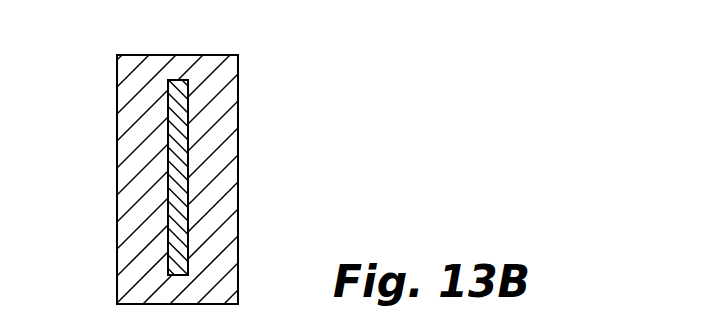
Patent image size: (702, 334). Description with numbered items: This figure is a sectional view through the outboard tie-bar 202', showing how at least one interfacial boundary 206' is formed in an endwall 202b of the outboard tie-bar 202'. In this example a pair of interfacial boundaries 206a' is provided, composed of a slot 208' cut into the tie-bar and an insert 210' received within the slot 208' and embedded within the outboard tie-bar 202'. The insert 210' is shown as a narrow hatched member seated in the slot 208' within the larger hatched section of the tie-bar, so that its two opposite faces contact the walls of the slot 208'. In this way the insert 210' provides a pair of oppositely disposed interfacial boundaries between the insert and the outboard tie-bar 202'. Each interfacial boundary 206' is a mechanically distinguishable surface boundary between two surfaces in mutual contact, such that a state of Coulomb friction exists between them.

The outboard tie-bar 202' is at (236, 179).
The endwall 202b is at (139, 55).
The insert 210' is at (212, 160).
The interfacial boundary 206' is at (238, 177).
The pair of interfacial boundaries 206a' is at (255, 156).
The slot 208' is at (105, 228).